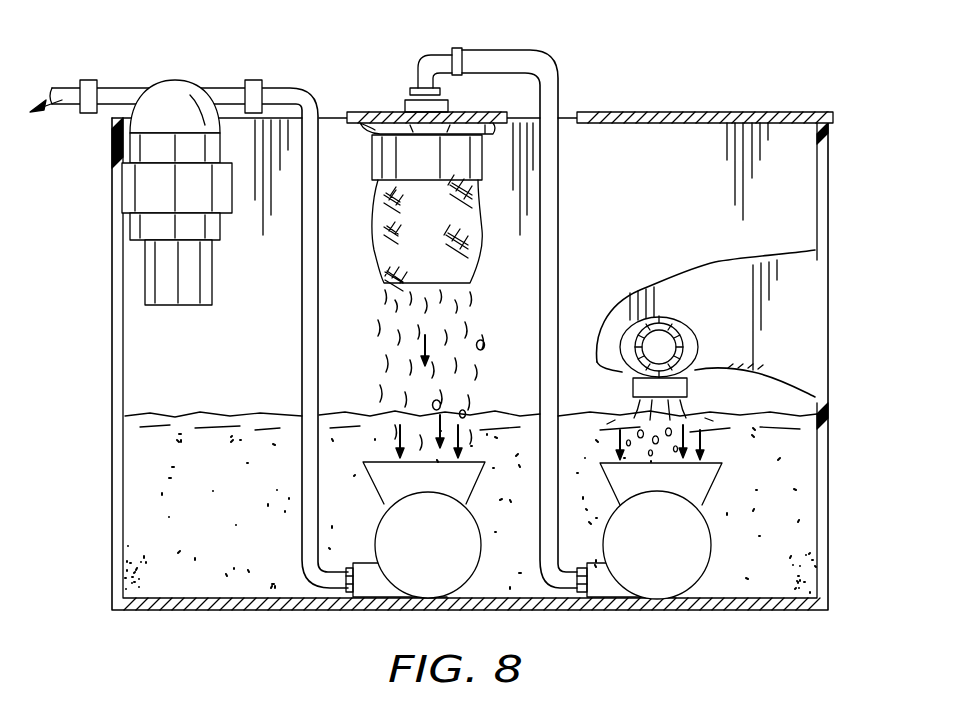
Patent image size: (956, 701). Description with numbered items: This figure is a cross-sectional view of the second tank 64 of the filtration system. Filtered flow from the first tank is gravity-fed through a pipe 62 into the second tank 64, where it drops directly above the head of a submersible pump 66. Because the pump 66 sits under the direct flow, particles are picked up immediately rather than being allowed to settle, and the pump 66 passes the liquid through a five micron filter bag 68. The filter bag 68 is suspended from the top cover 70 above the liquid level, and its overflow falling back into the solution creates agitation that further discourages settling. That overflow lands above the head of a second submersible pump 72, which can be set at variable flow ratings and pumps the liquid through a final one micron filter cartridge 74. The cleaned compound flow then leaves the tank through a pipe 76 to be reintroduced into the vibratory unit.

The pipe 62 is at (690, 332).
The second tank 64 is at (820, 220).
The submersible pump 66 is at (692, 563).
The filter bag 68 is at (472, 250).
The top cover 70 is at (609, 112).
The second submersible pump 72 is at (447, 572).
The filter cartridge 74 is at (200, 284).
The pipe 76 is at (118, 92).